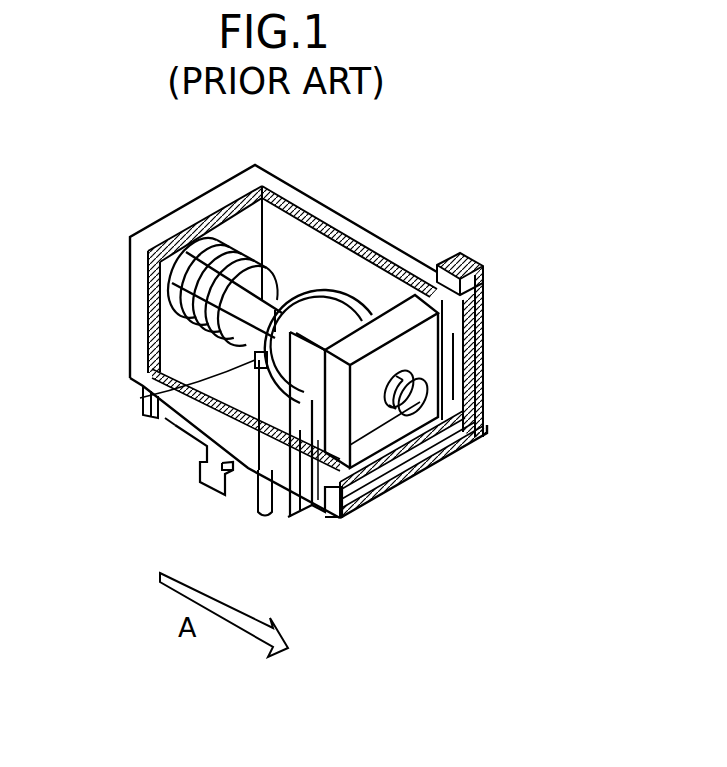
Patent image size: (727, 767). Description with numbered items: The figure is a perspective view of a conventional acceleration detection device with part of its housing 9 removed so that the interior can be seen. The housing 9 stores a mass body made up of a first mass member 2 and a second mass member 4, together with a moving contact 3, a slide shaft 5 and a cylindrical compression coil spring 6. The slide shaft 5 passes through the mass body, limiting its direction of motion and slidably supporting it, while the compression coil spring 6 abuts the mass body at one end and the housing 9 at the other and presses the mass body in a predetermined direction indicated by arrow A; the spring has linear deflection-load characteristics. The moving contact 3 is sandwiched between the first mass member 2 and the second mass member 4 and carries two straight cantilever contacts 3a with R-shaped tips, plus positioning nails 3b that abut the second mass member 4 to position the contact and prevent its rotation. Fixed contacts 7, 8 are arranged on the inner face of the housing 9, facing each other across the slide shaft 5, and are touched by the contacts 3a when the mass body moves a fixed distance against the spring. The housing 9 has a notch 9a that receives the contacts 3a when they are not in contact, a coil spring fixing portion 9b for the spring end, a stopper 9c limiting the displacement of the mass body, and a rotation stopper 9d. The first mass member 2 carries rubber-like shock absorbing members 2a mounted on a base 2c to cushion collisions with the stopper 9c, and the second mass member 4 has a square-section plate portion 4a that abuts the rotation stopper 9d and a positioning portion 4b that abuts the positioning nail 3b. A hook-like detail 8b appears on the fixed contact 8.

The first mass member 2 is at (368, 275).
The shock absorbing members 2a is at (140, 398).
The base 2c is at (173, 418).
The moving contact 3 is at (293, 442).
The contacts 3a is at (318, 502).
The positioning nails 3b is at (258, 470).
The second mass member 4 is at (438, 265).
The plate portion 4a is at (375, 470).
The positioning portion 4b is at (407, 467).
The slide shaft 5 is at (412, 392).
The compression coil spring 6 is at (292, 265).
The fixed contact 7 is at (323, 272).
The fixed contact 8 is at (180, 447).
The terminal hook 8b is at (222, 472).
The housing 9 is at (170, 222).
The notch 9a is at (455, 353).
The coil spring fixing portion 9b is at (215, 247).
The stopper 9c is at (130, 290).
The rotation stopper 9d is at (413, 308).